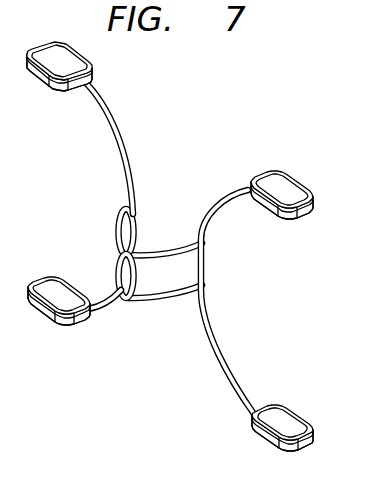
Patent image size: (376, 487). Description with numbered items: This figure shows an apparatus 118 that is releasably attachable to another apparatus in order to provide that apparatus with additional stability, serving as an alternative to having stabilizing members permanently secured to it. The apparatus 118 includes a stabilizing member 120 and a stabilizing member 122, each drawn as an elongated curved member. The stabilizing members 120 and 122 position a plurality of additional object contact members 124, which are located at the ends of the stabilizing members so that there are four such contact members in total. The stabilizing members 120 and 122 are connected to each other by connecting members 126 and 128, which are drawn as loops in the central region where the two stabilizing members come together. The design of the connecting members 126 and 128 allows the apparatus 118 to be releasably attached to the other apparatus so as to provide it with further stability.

The apparatus 118 is at (252, 89).
The stabilizing member 120 is at (110, 126).
The stabilizing member 122 is at (225, 203).
The additional object contact members 124 is at (47, 53).
The connecting member 126 is at (153, 251).
The connecting member 128 is at (157, 297).